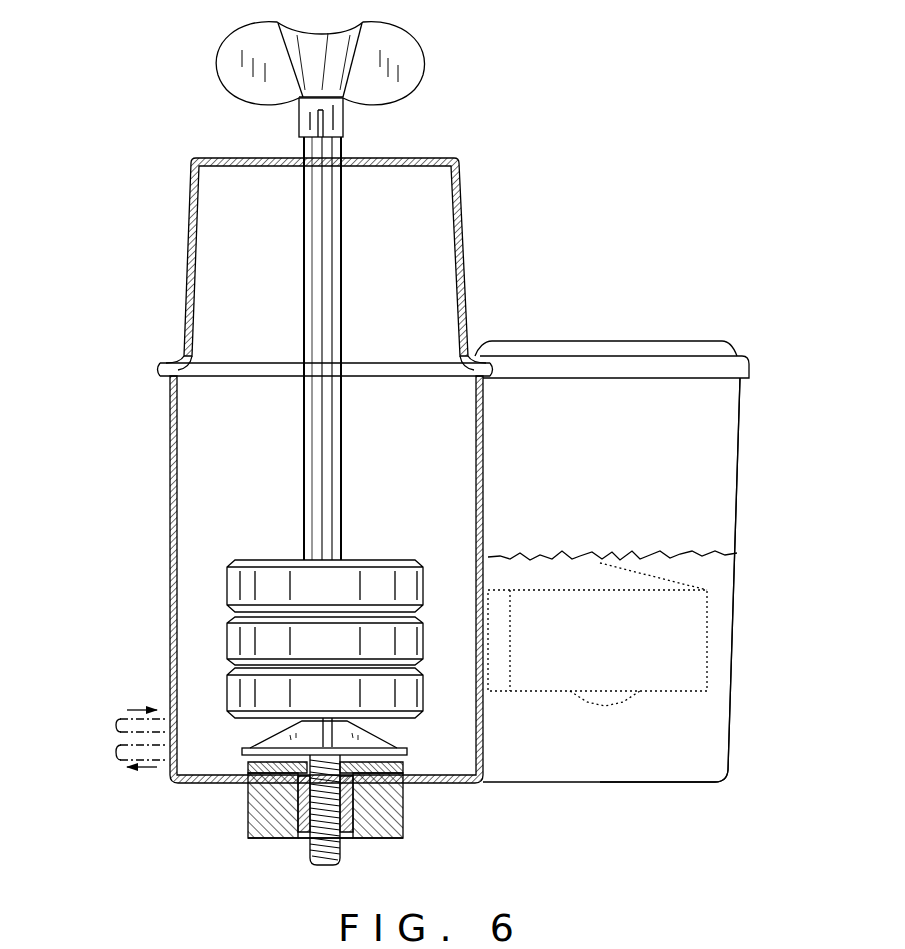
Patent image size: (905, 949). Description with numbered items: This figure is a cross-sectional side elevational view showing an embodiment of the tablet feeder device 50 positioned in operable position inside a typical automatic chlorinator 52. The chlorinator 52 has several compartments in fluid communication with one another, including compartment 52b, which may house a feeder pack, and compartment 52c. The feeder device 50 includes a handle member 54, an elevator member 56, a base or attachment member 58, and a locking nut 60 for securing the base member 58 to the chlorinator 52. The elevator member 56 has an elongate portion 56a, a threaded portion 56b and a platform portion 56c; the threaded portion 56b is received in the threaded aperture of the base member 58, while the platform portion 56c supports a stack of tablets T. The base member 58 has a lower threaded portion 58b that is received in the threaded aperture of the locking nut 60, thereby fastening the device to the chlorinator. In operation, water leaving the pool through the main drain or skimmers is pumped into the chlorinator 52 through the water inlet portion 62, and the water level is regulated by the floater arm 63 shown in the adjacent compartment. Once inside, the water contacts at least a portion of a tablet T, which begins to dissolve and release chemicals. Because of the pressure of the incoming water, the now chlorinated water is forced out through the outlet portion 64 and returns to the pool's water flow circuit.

The tablet feeder device 50 is at (353, 218).
The automatic chlorinator 52 is at (573, 311).
The compartment 52b is at (186, 203).
The compartment 52c is at (750, 425).
The handle member 54 is at (417, 38).
The elevator member 56 is at (346, 437).
The elongate portion 56a is at (344, 287).
The threaded portion 56b is at (307, 854).
The platform portion 56c is at (384, 735).
The base member 58 is at (404, 766).
The lower threaded portion 58b is at (384, 808).
The locking nut 60 is at (388, 838).
The water inlet portion 62 is at (116, 725).
The floater arm 63 is at (707, 617).
The outlet portion 64 is at (116, 752).
The tablet T is at (393, 560).